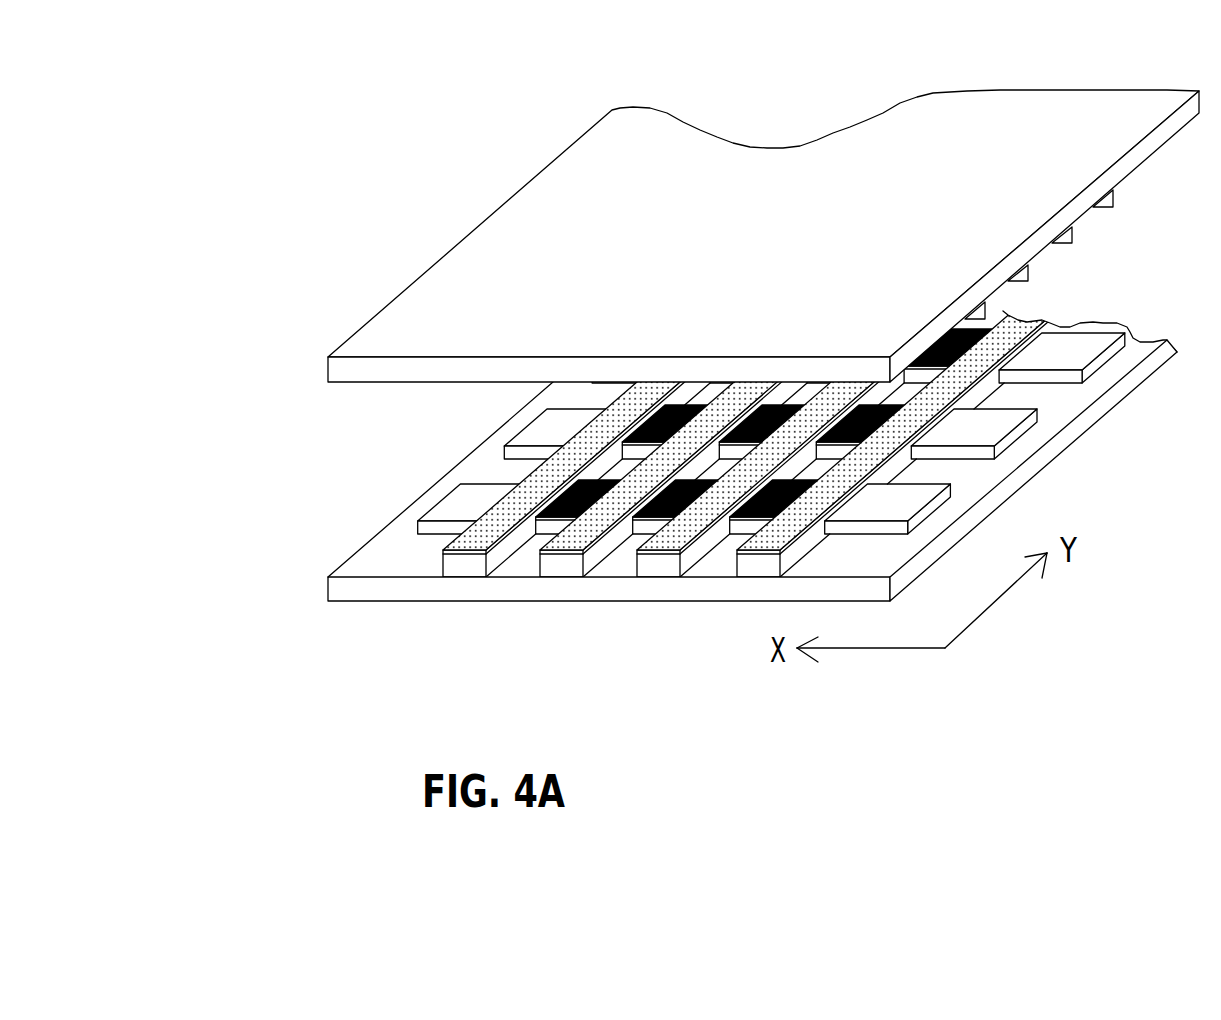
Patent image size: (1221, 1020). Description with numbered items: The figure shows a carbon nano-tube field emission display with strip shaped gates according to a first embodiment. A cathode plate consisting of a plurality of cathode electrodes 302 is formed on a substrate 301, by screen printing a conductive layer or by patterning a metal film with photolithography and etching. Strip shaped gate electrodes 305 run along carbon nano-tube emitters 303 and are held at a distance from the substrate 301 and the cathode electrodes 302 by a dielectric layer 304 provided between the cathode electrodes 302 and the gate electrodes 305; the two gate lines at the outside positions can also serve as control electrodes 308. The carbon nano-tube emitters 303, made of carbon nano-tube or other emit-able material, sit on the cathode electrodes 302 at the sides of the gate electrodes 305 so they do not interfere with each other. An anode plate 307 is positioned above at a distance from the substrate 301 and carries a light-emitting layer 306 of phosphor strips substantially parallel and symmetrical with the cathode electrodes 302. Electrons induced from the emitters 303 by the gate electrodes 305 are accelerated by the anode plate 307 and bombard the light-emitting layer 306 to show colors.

The substrate 301 is at (355, 586).
The cathode electrode 302 is at (533, 429).
The carbon nano-tube emitter 303 is at (933, 427).
The dielectric layer 304 is at (748, 567).
The gate electrode 305 is at (670, 535).
The light-emitting layer 306 is at (1092, 220).
The anode plate 307 is at (420, 352).
The control electrode 308 is at (462, 541).